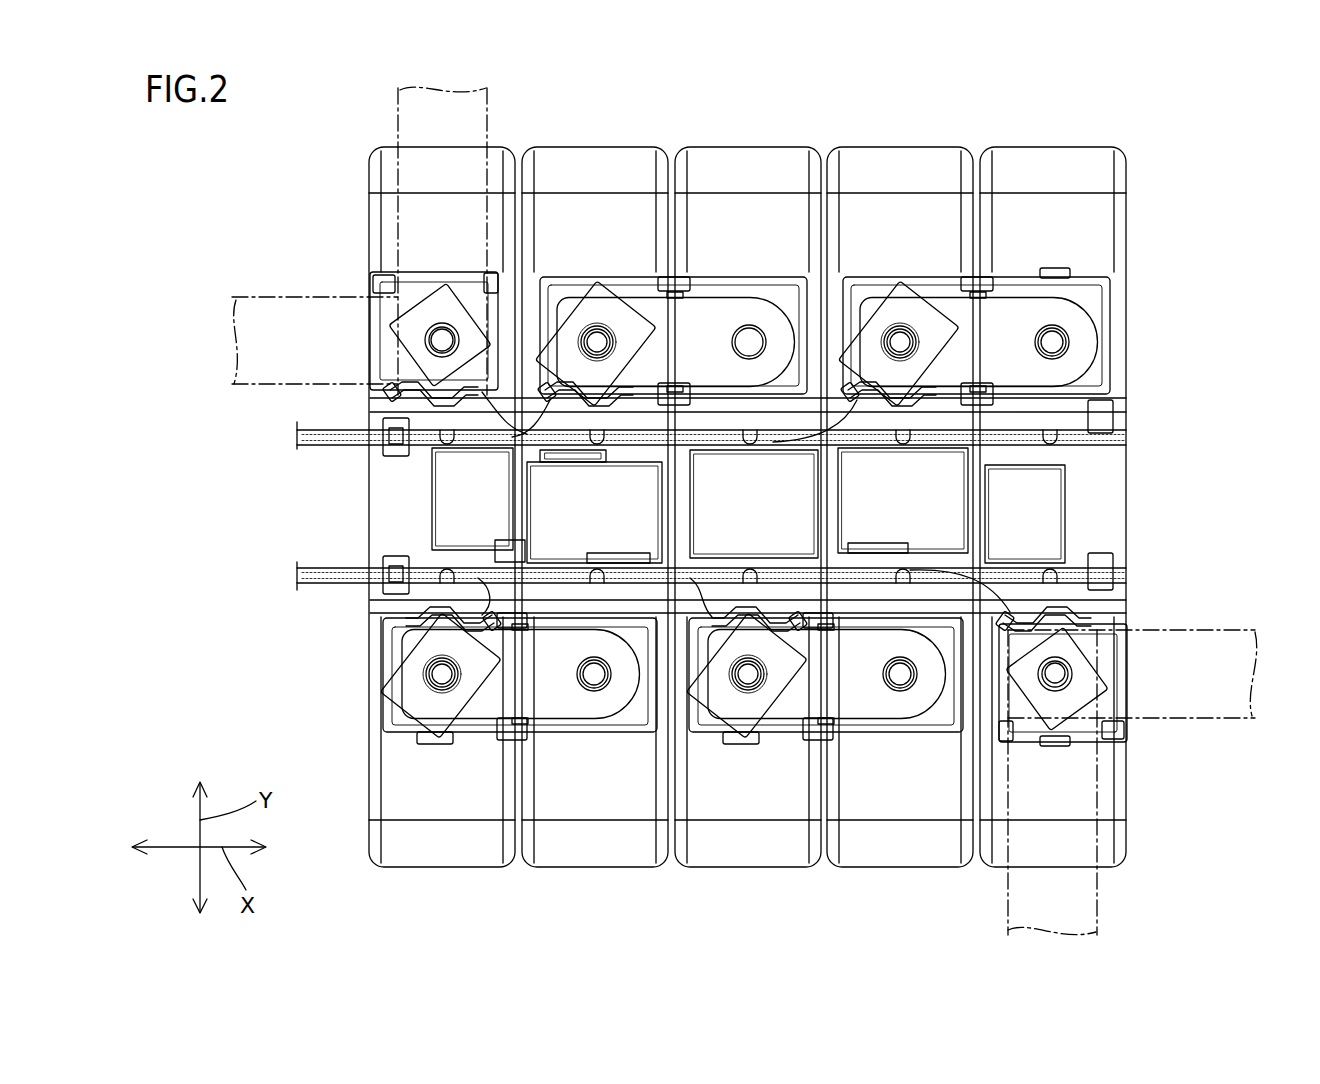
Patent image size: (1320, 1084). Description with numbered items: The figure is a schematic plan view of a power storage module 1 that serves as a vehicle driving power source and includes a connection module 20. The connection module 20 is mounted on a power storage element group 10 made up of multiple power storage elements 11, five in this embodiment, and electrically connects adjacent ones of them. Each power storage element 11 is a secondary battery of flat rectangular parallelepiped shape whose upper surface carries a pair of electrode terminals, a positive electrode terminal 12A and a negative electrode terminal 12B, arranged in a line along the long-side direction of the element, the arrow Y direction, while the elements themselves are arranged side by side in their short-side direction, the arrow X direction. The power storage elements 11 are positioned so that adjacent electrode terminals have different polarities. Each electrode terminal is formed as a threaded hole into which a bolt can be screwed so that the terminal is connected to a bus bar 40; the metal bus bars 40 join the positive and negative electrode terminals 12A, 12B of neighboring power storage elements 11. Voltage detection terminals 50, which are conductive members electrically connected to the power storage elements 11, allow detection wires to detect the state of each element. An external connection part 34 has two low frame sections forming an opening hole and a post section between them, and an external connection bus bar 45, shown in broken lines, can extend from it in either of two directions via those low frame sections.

The power storage module 1 is at (660, 940).
The power storage element group 10 is at (1006, 132).
The power storage element 11 is at (497, 146).
The positive electrode terminal 12A is at (440, 334).
The negative electrode terminal 12B is at (901, 334).
The connection module 20 is at (721, 449).
The external connection part 34 is at (430, 282).
The bus bar 40 is at (700, 330).
The external connection bus bar 45 is at (398, 98).
The voltage detection terminal 50 is at (602, 300).